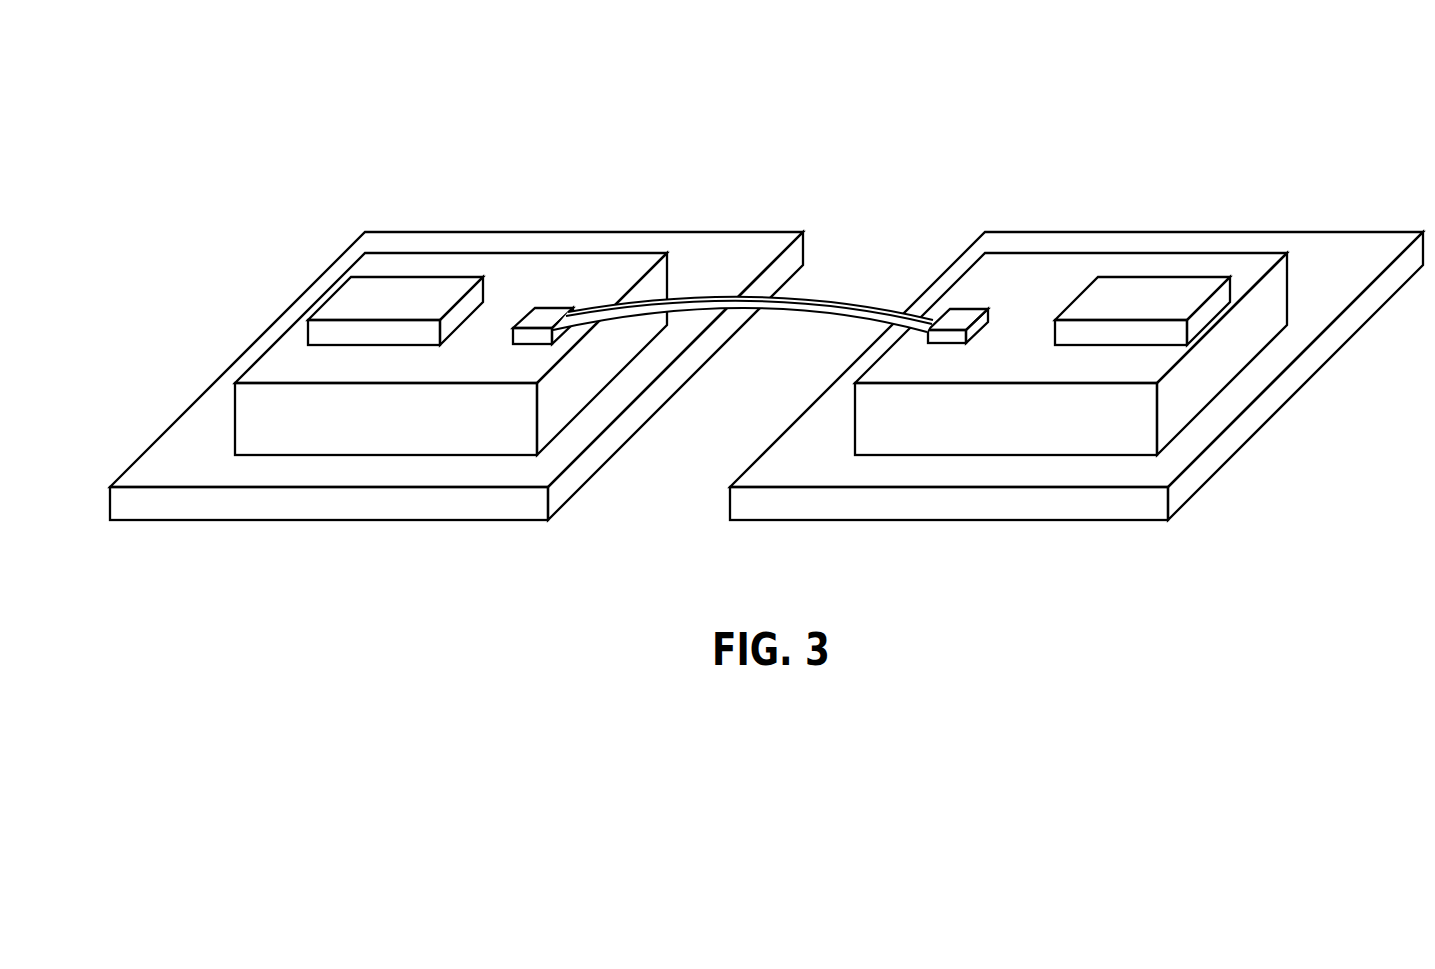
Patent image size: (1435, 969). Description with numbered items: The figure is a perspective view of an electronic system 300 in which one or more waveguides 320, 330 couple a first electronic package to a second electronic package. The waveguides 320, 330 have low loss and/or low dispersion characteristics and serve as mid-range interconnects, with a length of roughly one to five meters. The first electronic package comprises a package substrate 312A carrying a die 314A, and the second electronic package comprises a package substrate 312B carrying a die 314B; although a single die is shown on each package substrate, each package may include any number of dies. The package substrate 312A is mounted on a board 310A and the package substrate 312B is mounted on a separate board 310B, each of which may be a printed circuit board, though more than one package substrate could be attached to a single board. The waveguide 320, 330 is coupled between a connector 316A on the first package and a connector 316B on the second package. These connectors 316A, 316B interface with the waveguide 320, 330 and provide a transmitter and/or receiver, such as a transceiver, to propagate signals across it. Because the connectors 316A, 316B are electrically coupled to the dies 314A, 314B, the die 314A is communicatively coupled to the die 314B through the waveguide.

The electronic system 300 is at (251, 115).
The board 310A is at (380, 507).
The board 310B is at (1057, 507).
The package substrate 312A is at (281, 433).
The package substrate 312B is at (958, 433).
The die 314A is at (400, 292).
The die 314B is at (1140, 298).
The connector 316A is at (547, 312).
The connector 316B is at (963, 308).
The waveguide 320 is at (743, 267).
The waveguide 330 is at (803, 298).